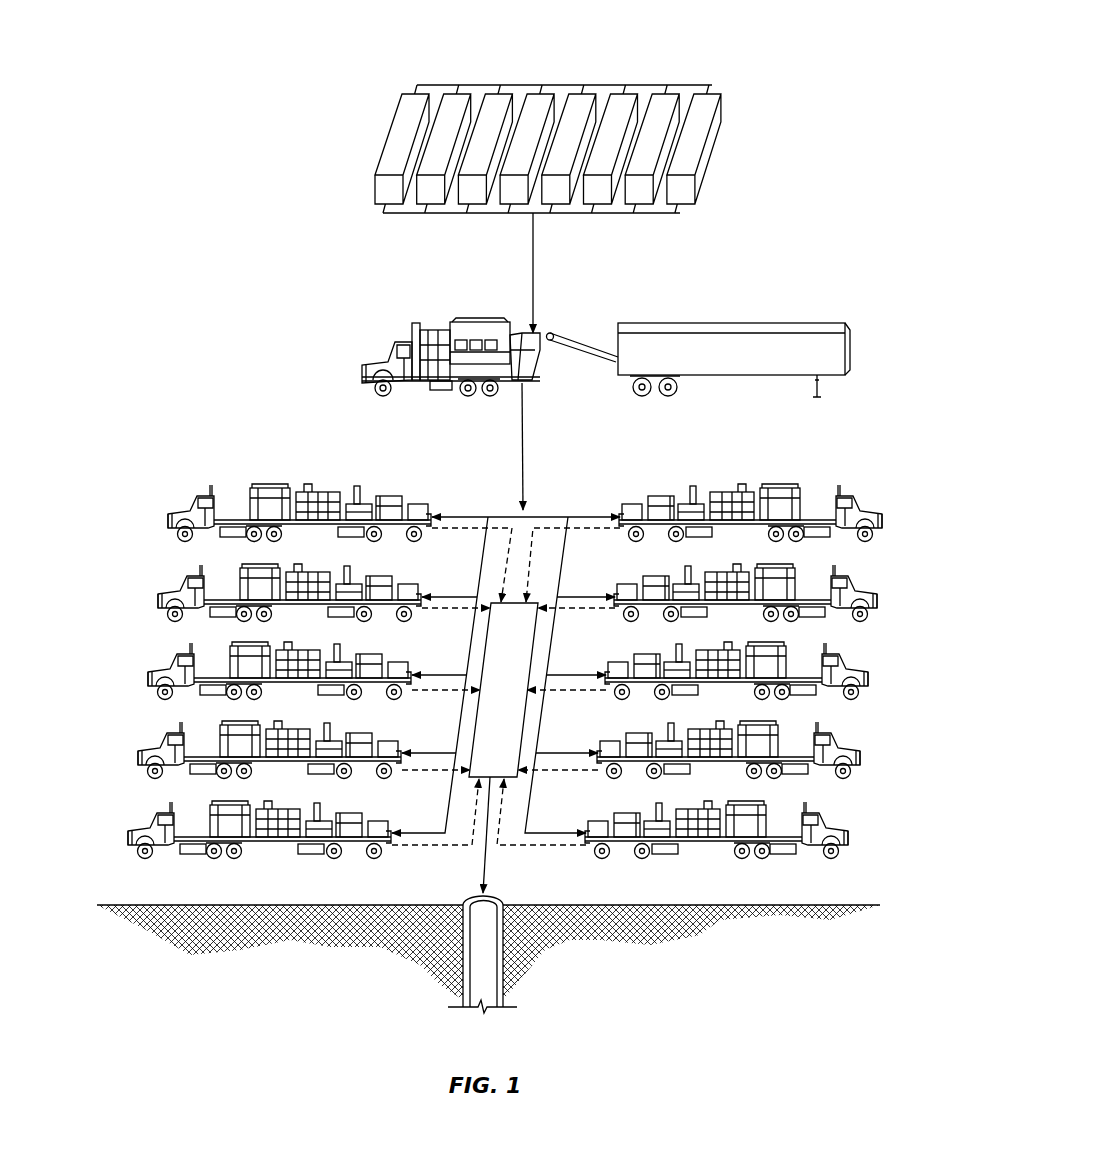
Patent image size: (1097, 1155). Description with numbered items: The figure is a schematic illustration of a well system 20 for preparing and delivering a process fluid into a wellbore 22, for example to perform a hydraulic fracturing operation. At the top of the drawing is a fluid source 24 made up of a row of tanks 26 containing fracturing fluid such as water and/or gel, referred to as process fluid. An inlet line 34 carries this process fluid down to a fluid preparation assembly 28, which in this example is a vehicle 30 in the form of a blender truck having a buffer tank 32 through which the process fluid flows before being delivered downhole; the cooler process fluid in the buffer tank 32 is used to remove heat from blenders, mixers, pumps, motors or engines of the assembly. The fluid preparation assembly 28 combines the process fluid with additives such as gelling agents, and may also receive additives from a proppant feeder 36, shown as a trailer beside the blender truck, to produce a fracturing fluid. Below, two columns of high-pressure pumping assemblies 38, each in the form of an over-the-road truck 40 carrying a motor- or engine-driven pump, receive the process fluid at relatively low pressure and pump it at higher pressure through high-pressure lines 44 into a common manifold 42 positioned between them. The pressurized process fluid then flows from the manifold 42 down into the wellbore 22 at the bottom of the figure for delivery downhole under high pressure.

The well system 20 is at (745, 42).
The wellbore 22 is at (478, 970).
The fluid source 24 is at (539, 149).
The tanks 26 is at (613, 138).
The fluid preparation assembly 28 is at (451, 381).
The vehicle 30 is at (408, 338).
The buffer tank 32 is at (500, 318).
The inlet line 34 is at (535, 275).
The proppant feeder 36 is at (722, 323).
The high-pressure pumping assemblies 38 is at (232, 498).
The over-the-road trucks 40 is at (352, 538).
The common manifold 42 is at (507, 675).
The high-pressure lines 44 is at (472, 532).